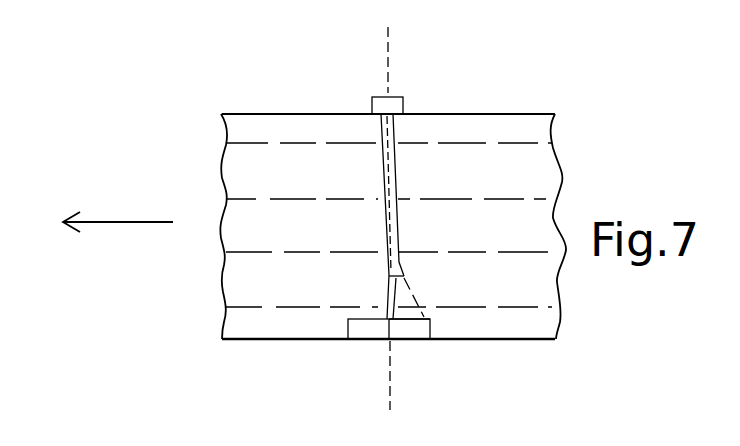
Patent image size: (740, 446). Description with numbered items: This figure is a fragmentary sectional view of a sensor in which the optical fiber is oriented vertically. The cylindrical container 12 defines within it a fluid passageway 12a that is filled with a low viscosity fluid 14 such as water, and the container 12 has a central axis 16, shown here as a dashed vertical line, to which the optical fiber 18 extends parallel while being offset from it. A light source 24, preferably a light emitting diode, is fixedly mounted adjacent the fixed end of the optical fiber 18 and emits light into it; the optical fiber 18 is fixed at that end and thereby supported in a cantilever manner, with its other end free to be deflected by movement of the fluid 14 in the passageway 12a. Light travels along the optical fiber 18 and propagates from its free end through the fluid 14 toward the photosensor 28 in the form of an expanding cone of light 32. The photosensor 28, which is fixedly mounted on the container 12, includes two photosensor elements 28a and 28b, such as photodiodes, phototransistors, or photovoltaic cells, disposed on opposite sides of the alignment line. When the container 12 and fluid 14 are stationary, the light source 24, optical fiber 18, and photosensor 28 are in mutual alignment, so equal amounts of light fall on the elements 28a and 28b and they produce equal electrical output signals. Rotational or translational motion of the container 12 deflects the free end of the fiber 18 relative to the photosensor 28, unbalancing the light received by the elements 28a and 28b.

The cylindrical container 12 is at (240, 114).
The fluid passageway 12a is at (540, 178).
The low viscosity fluid 14 is at (337, 185).
The central axis 16 is at (389, 40).
The optical fiber 18 is at (400, 240).
The light source 24 is at (372, 104).
The photosensor 28 is at (338, 356).
The photosensor element 28a is at (370, 341).
The photosensor element 28b is at (412, 341).
The cone of light 32 is at (417, 293).